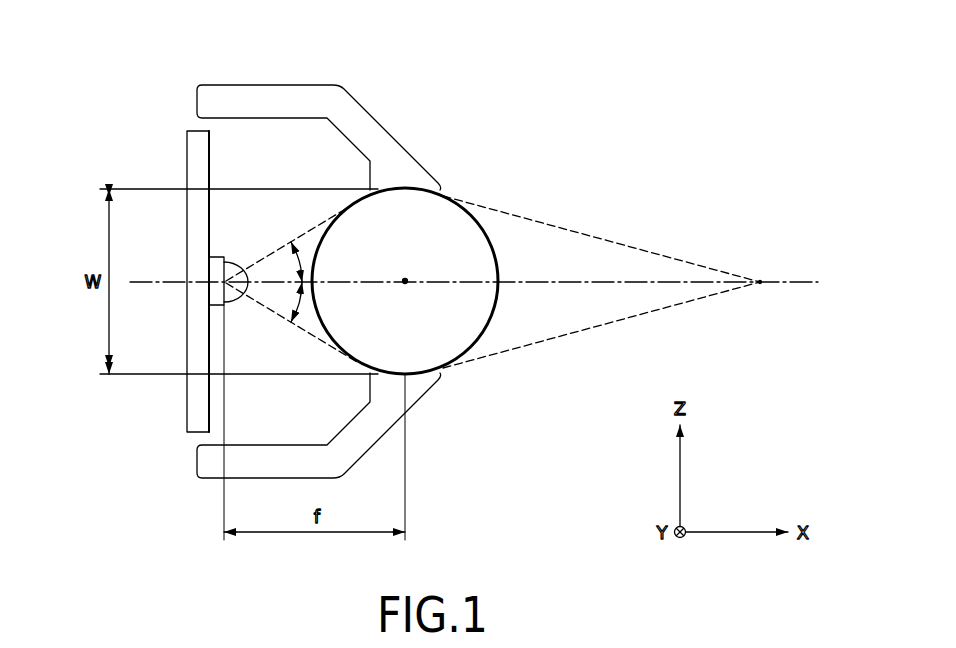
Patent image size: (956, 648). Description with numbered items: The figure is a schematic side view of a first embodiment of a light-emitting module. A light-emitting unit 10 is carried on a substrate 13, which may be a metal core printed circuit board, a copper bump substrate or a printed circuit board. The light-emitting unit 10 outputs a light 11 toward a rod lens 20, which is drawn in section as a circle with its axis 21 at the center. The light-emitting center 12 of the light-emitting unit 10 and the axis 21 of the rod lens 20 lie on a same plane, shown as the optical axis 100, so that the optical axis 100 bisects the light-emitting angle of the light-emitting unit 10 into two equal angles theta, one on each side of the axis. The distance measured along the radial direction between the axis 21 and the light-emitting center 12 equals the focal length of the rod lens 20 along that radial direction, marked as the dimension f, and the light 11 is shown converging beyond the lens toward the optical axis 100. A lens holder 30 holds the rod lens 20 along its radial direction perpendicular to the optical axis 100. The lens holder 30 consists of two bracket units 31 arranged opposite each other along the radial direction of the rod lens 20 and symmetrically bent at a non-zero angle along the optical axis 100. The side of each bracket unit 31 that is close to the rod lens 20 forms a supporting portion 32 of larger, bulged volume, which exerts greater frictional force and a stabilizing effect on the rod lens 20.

The light-emitting unit 10 is at (236, 313).
The light 11 is at (596, 234).
The light-emitting center 12 is at (240, 262).
The substrate 13 is at (193, 393).
The rod lens 20 is at (492, 326).
The axis 21 is at (406, 279).
The lens holder 30 is at (342, 242).
The bracket unit 31 is at (277, 97).
The supporting portion 32 is at (397, 152).
The optical axis 100 is at (790, 282).